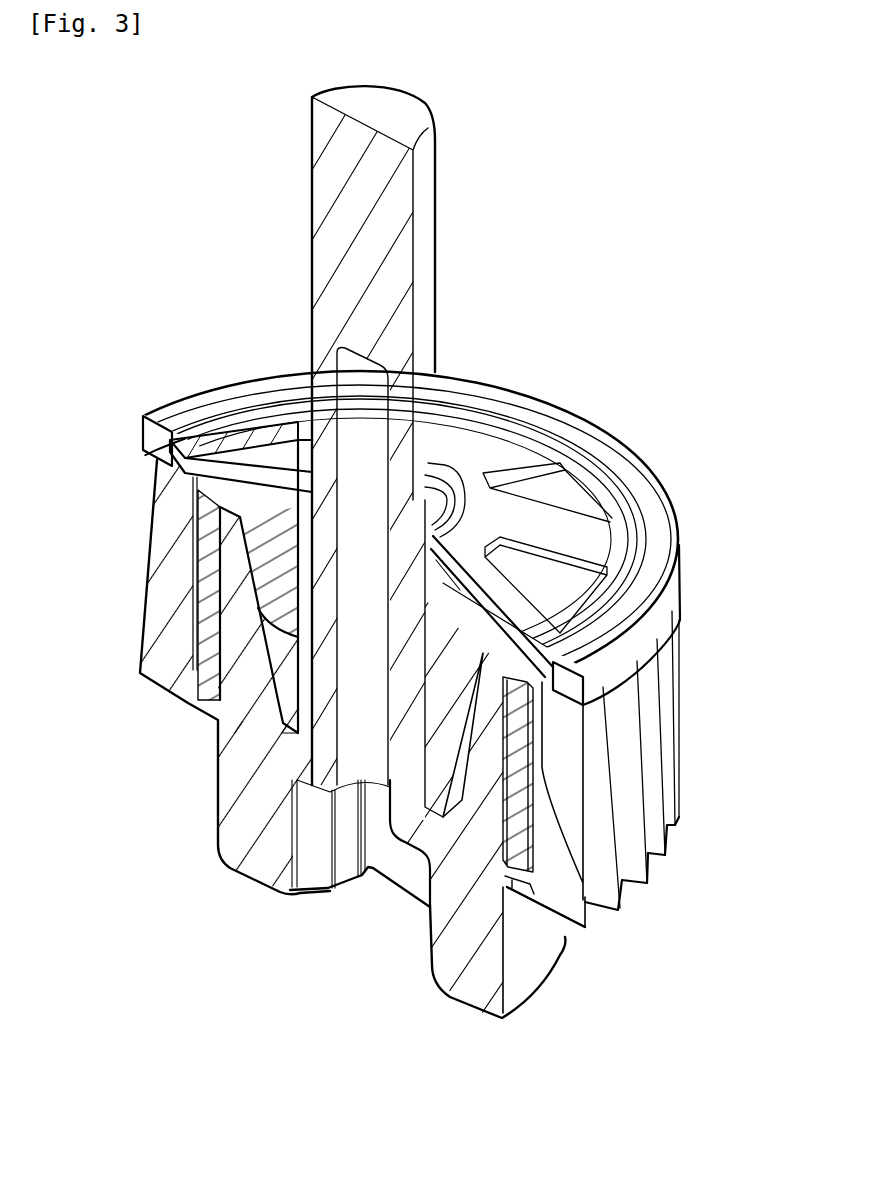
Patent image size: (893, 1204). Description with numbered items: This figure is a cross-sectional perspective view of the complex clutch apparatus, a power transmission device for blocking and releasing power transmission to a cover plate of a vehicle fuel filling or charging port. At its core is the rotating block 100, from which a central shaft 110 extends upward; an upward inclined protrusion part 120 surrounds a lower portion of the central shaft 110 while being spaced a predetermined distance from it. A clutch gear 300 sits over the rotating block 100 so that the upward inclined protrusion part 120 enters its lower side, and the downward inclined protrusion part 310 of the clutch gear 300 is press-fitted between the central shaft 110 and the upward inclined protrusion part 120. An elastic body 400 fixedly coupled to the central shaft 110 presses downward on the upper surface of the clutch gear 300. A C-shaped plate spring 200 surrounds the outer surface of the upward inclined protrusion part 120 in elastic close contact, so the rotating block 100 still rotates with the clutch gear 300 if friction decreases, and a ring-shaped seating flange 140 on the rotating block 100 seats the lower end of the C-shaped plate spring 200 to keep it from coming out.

The rotating block 100 is at (472, 993).
The central shaft 110 is at (435, 228).
The upward inclined protrusion part 120 is at (480, 767).
The seating flange 140 is at (523, 888).
The C-shaped plate spring 200 is at (215, 600).
The clutch gear 300 is at (636, 472).
The downward inclined protrusion part 310 is at (453, 677).
The elastic body 400 is at (263, 445).